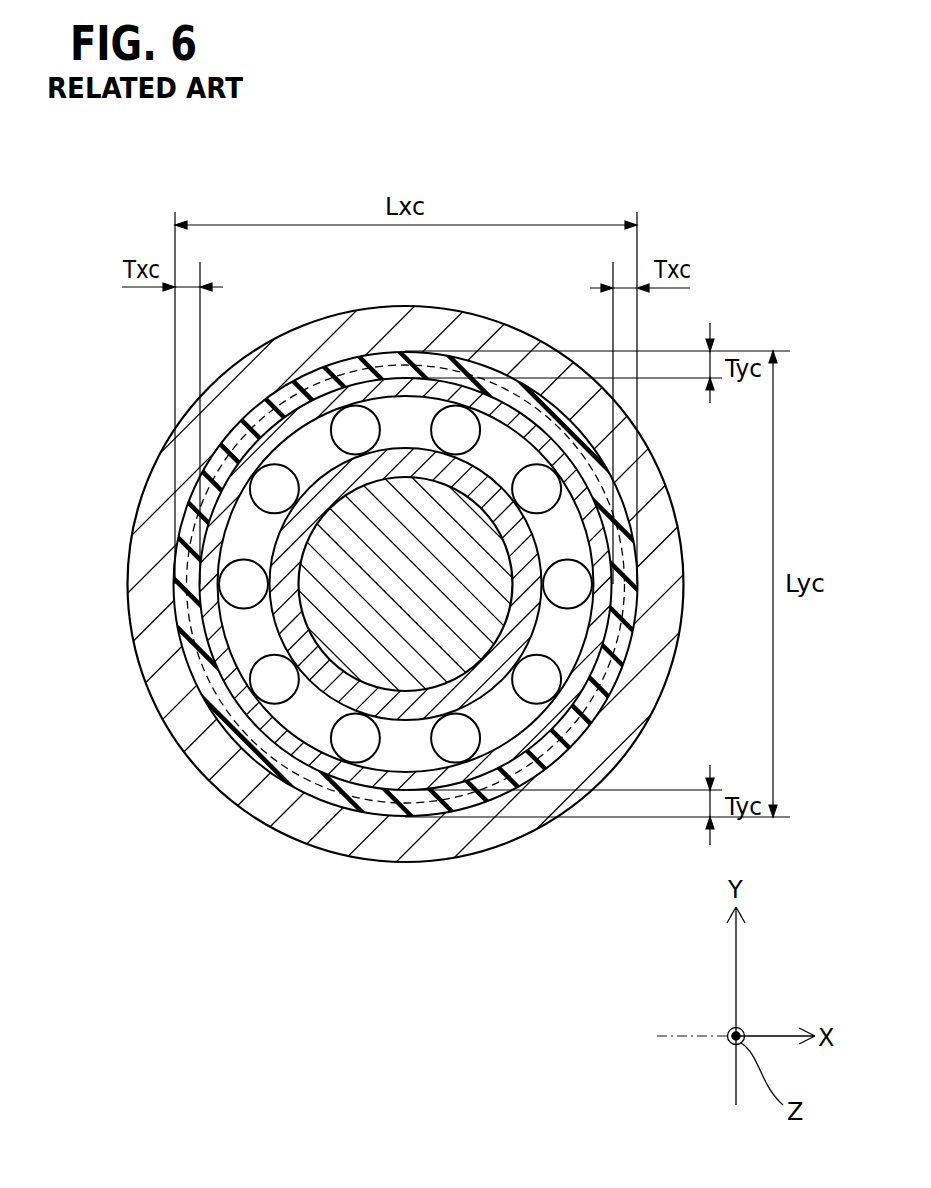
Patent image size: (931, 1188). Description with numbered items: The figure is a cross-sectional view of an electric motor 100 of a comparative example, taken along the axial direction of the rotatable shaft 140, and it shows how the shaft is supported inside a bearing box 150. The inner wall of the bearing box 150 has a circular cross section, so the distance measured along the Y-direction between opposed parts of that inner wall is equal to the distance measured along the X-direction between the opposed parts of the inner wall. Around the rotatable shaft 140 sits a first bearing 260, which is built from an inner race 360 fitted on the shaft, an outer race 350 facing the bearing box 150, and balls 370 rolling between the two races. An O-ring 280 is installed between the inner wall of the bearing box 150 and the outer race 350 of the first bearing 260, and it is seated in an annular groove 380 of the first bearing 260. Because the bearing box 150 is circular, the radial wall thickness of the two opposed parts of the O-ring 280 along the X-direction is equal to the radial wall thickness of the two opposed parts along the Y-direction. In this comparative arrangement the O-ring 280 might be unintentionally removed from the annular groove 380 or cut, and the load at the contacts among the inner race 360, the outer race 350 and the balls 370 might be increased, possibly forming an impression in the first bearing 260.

The electric motor 100 is at (149, 371).
The rotatable shaft 140 is at (490, 620).
The bearing box 150 is at (175, 708).
The first bearing 260 is at (427, 917).
The O-ring 280 is at (240, 742).
The outer race 350 is at (313, 776).
The inner race 360 is at (408, 706).
The balls 370 is at (356, 742).
The annular groove 380 is at (215, 641).